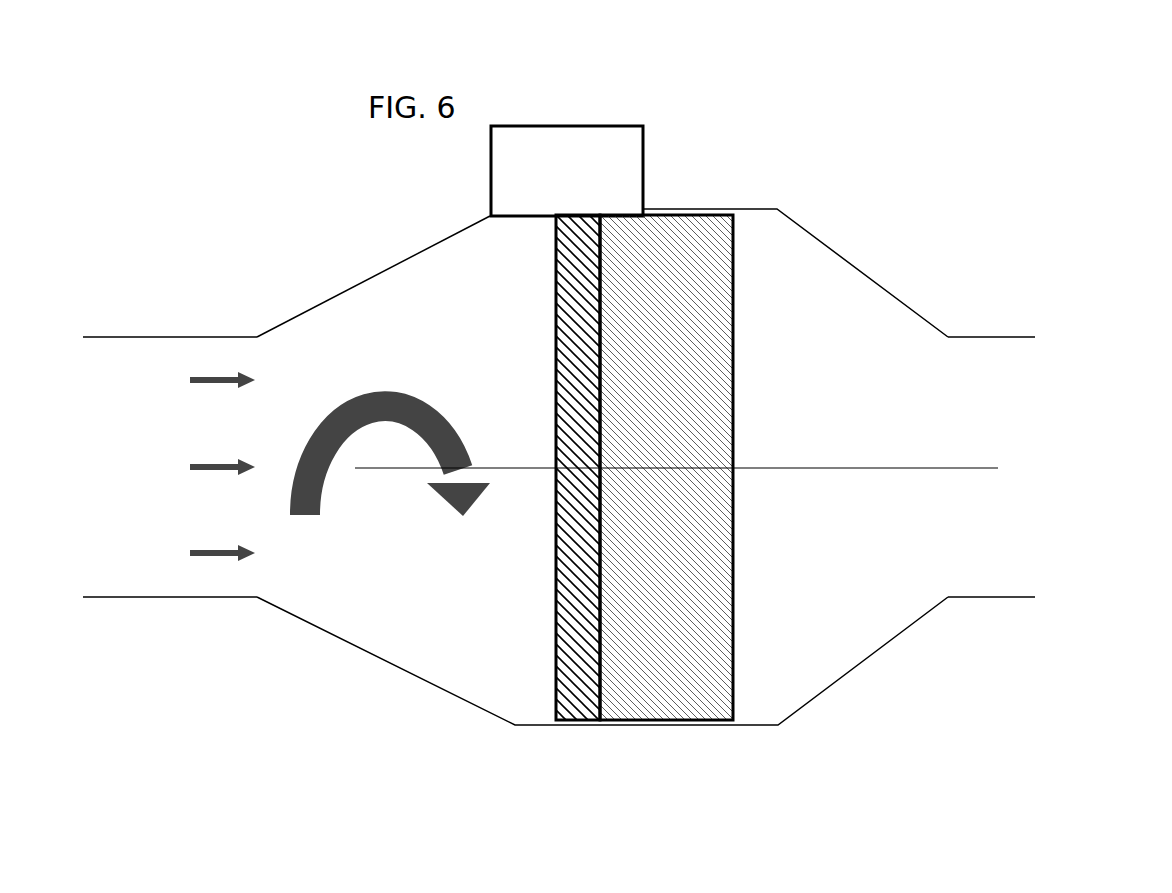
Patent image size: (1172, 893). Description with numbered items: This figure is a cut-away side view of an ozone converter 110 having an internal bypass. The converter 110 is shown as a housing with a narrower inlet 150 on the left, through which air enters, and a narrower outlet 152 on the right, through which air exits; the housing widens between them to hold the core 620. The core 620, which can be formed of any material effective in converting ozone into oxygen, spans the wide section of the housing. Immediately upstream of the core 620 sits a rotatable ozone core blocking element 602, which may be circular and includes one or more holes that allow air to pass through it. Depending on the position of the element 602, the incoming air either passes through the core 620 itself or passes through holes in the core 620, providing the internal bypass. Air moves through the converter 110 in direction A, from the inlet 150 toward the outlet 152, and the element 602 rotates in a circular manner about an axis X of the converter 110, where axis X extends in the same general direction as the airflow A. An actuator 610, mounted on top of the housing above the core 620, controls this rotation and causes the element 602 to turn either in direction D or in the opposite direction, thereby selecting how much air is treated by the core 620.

The converter 110 is at (320, 296).
The inlet 150 is at (175, 345).
The outlet 152 is at (1000, 337).
The actuator 610 is at (643, 170).
The core 620 is at (735, 345).
The rotatable ozone core blocking element 602 is at (557, 558).
The direction A is at (203, 471).
The direction D is at (455, 423).
The axis X is at (893, 472).